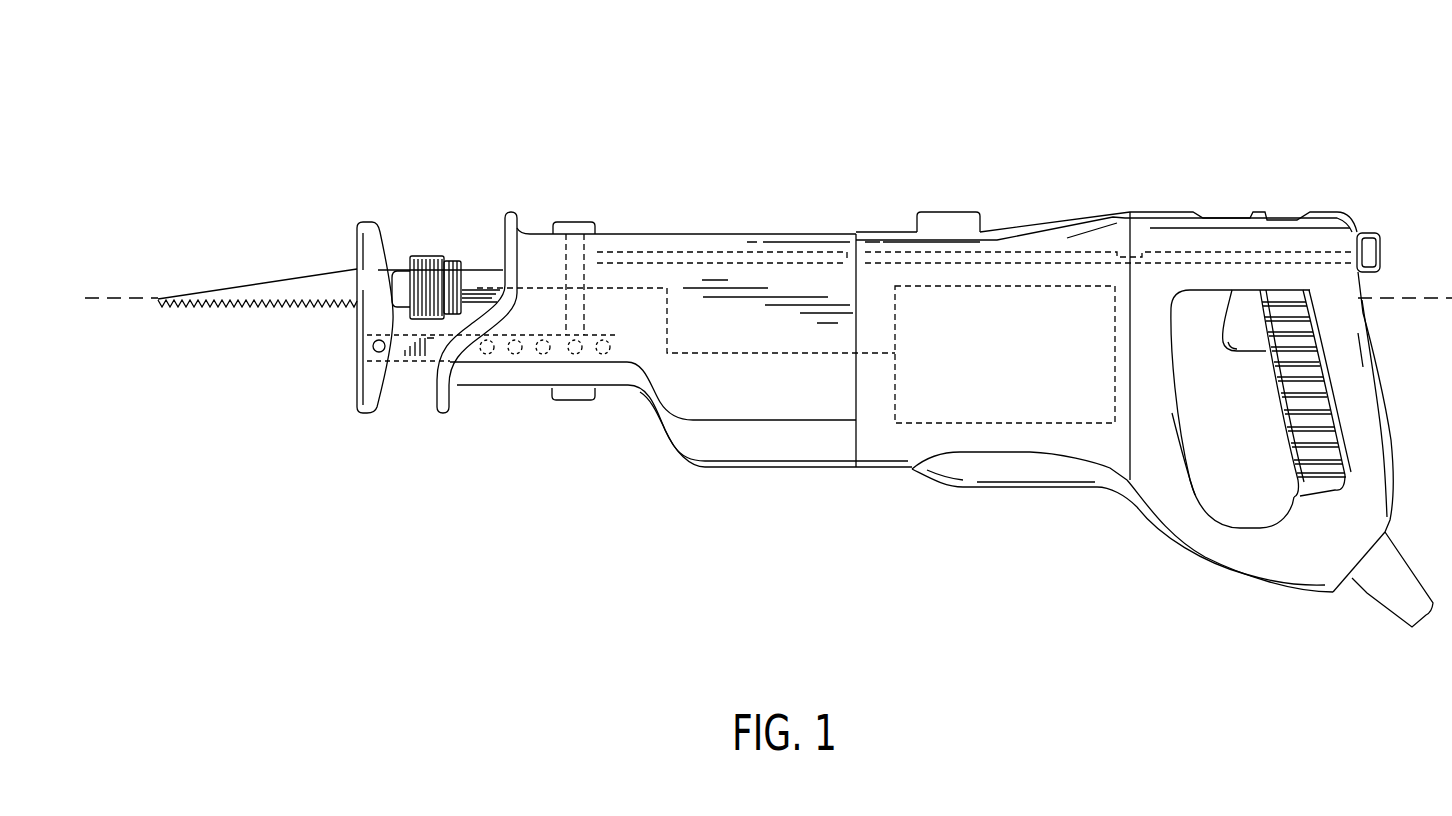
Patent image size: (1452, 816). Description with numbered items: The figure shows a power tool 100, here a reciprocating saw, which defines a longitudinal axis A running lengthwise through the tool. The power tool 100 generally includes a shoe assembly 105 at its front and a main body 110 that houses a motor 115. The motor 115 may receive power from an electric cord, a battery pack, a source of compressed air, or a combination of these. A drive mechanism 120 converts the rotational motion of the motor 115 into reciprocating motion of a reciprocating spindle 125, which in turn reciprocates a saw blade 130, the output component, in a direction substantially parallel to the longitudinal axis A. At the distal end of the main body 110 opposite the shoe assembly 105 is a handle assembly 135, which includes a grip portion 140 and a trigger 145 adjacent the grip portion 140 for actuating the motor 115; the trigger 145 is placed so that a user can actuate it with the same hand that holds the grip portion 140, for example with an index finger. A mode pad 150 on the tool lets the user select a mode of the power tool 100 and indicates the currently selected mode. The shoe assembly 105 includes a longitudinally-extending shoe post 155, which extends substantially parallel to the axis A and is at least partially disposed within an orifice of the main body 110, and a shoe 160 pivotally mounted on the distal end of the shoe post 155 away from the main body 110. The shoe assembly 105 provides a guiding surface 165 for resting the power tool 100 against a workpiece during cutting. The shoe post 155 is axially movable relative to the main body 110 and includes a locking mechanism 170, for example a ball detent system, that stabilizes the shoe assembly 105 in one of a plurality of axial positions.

The power tool 100 is at (834, 130).
The shoe assembly 105 is at (395, 443).
The main body 110 is at (767, 232).
The motor 115 is at (1018, 430).
The drive mechanism 120 is at (632, 285).
The reciprocating spindle 125 is at (482, 270).
The saw blade 130 is at (272, 278).
The handle assembly 135 is at (1242, 204).
The grip portion 140 is at (1363, 398).
The trigger 145 is at (1252, 350).
The mode pad 150 is at (926, 212).
The shoe post 155 is at (395, 362).
The shoe 160 is at (357, 262).
The guiding surface 165 is at (353, 392).
The locking mechanism 170 is at (575, 337).
The longitudinal axis A is at (1393, 300).